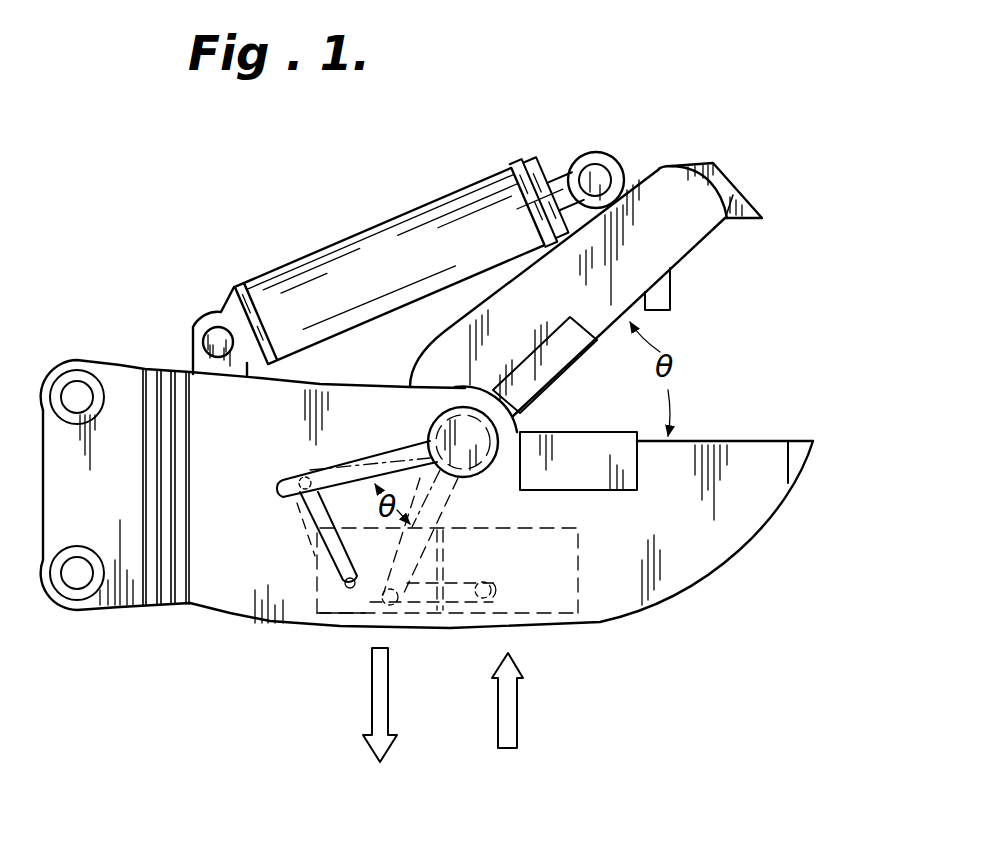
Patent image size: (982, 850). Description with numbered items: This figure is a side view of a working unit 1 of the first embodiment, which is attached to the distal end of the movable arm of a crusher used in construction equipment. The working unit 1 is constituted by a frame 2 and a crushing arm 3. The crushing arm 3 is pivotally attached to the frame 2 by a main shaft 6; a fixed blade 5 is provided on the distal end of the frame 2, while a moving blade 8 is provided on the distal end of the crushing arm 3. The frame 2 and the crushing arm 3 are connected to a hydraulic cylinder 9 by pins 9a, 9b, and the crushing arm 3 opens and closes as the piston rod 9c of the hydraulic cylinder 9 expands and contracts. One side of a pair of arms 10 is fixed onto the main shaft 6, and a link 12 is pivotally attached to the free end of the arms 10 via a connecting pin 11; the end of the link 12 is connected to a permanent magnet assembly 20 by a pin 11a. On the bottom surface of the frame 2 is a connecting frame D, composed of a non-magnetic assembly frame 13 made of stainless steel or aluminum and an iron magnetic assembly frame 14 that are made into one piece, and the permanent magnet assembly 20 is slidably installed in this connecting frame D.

The working unit 1 is at (795, 360).
The frame 2 is at (723, 540).
The crushing arm 3 is at (663, 210).
The fixed blade 5 is at (818, 447).
The main shaft 6 is at (450, 432).
The moving blade 8 is at (733, 197).
The hydraulic cylinder 9 is at (377, 247).
The pin 9a is at (600, 180).
The pin 9b is at (213, 337).
The piston rod 9c is at (562, 177).
The pair of arms 10 is at (440, 511).
The connecting pin 11 is at (393, 597).
The pin 11a is at (480, 607).
The link 12 is at (423, 597).
The non-magnetic assembly frame 13 is at (530, 622).
The magnetic assembly frame 14 is at (348, 620).
The permanent magnet assembly 20 is at (567, 597).
The connecting frame D is at (572, 582).